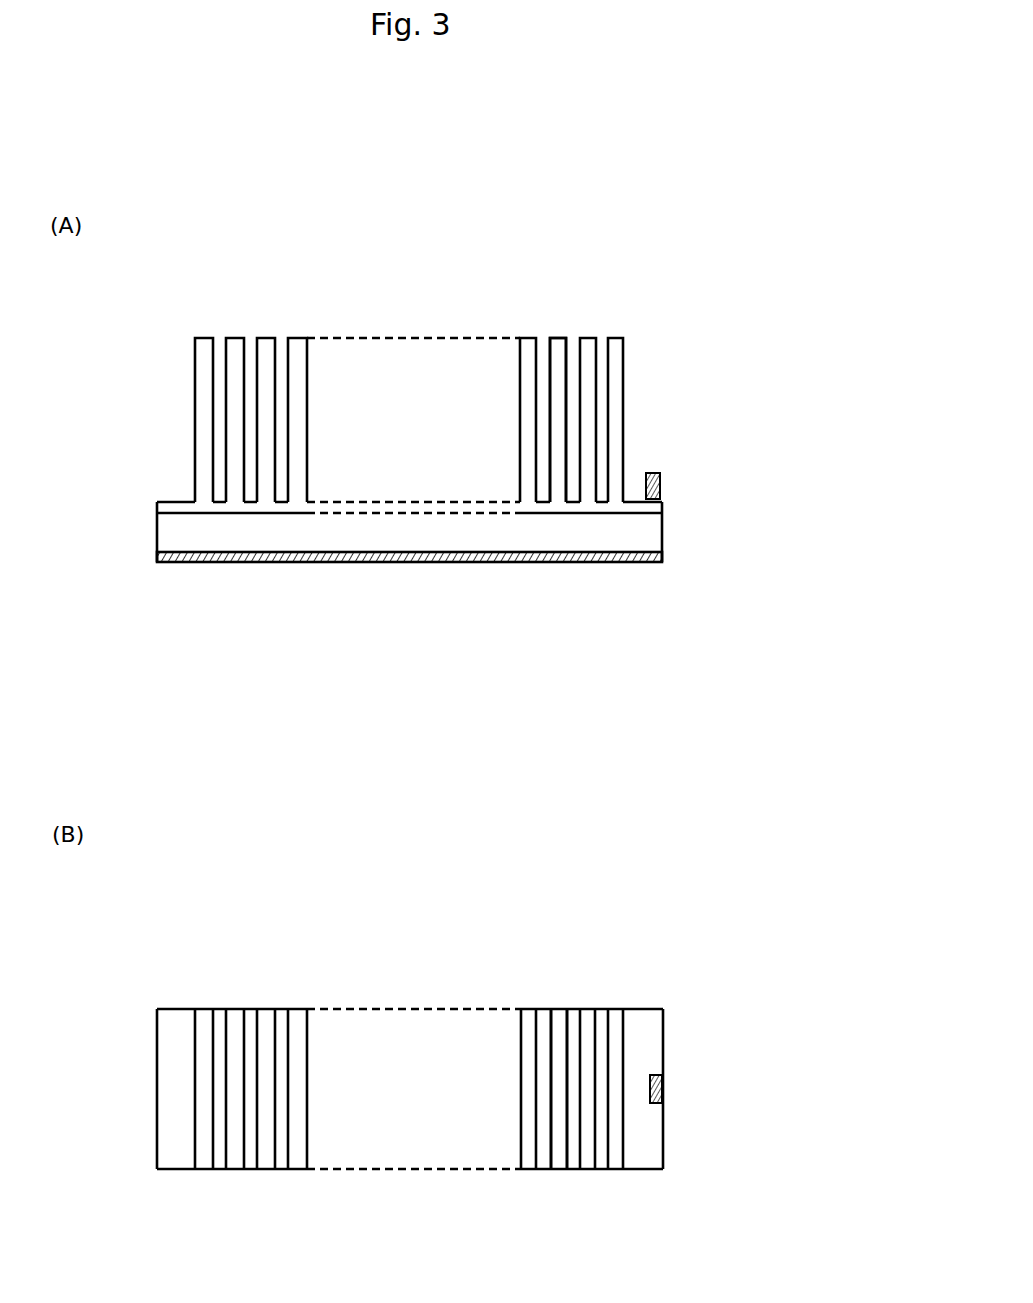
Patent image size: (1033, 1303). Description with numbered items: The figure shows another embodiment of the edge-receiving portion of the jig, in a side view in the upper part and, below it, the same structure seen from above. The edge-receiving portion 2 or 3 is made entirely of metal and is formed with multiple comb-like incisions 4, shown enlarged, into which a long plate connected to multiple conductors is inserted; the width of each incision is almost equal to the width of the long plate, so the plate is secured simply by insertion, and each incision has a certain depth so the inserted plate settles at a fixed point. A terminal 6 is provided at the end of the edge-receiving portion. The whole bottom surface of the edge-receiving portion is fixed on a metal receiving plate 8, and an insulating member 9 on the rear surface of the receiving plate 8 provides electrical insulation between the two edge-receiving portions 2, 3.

The edge-receiving portion 2 is at (558, 345).
The edge-receiving portion 3 is at (646, 696).
The incisions 4 is at (220, 352).
The terminal 6 is at (660, 482).
The receiving plate 8 is at (551, 535).
The insulating member 9 is at (269, 565).